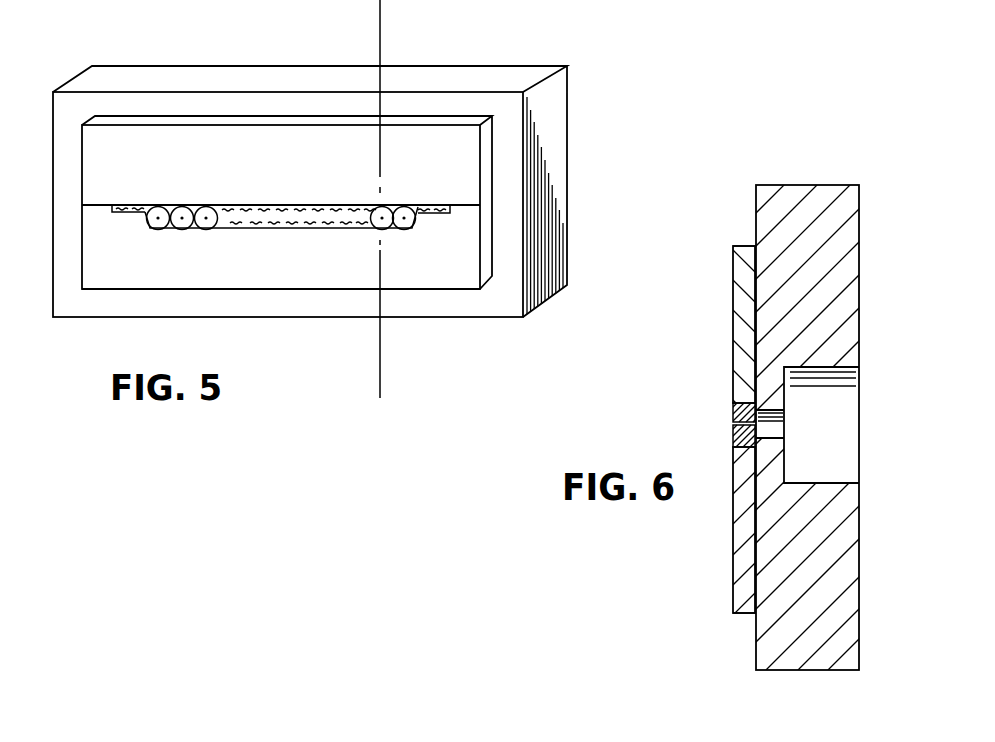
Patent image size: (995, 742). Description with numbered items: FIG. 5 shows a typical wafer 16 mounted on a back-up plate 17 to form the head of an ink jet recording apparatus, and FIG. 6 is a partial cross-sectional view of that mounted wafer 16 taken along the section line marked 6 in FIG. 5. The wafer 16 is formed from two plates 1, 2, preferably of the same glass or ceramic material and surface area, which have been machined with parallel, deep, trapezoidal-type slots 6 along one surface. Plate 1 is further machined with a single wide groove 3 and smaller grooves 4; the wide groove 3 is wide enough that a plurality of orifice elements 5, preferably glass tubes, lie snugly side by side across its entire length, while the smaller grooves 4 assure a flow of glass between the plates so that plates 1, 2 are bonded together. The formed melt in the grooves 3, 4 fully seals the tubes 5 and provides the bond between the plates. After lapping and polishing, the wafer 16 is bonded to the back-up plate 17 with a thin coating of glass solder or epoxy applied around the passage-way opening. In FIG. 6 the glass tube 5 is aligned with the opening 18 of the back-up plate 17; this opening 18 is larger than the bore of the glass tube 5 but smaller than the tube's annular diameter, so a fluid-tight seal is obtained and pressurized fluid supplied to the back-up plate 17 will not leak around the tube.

In FIG. 5, the plate 1 is at (92, 237).
In FIG. 6, the plate 1 is at (740, 564).
In FIG. 5, the plate 2 is at (92, 145).
In FIG. 6, the plate 2 is at (737, 294).
In FIG. 5, the wide groove 3 is at (236, 228).
In FIG. 5, the smaller grooves 4 is at (128, 212).
In FIG. 5, the orifice elements 5 is at (181, 229).
In FIG. 6, the orifice elements 5 is at (732, 411).
In FIG. 5, the slots 6 is at (388, 32).
In FIG. 5, the wafer 16 is at (496, 151).
In FIG. 6, the wafer 16 is at (712, 331).
In FIG. 5, the back-up plate 17 is at (563, 188).
In FIG. 6, the back-up plate 17 is at (831, 192).
In FIG. 6, the opening 18 is at (850, 413).